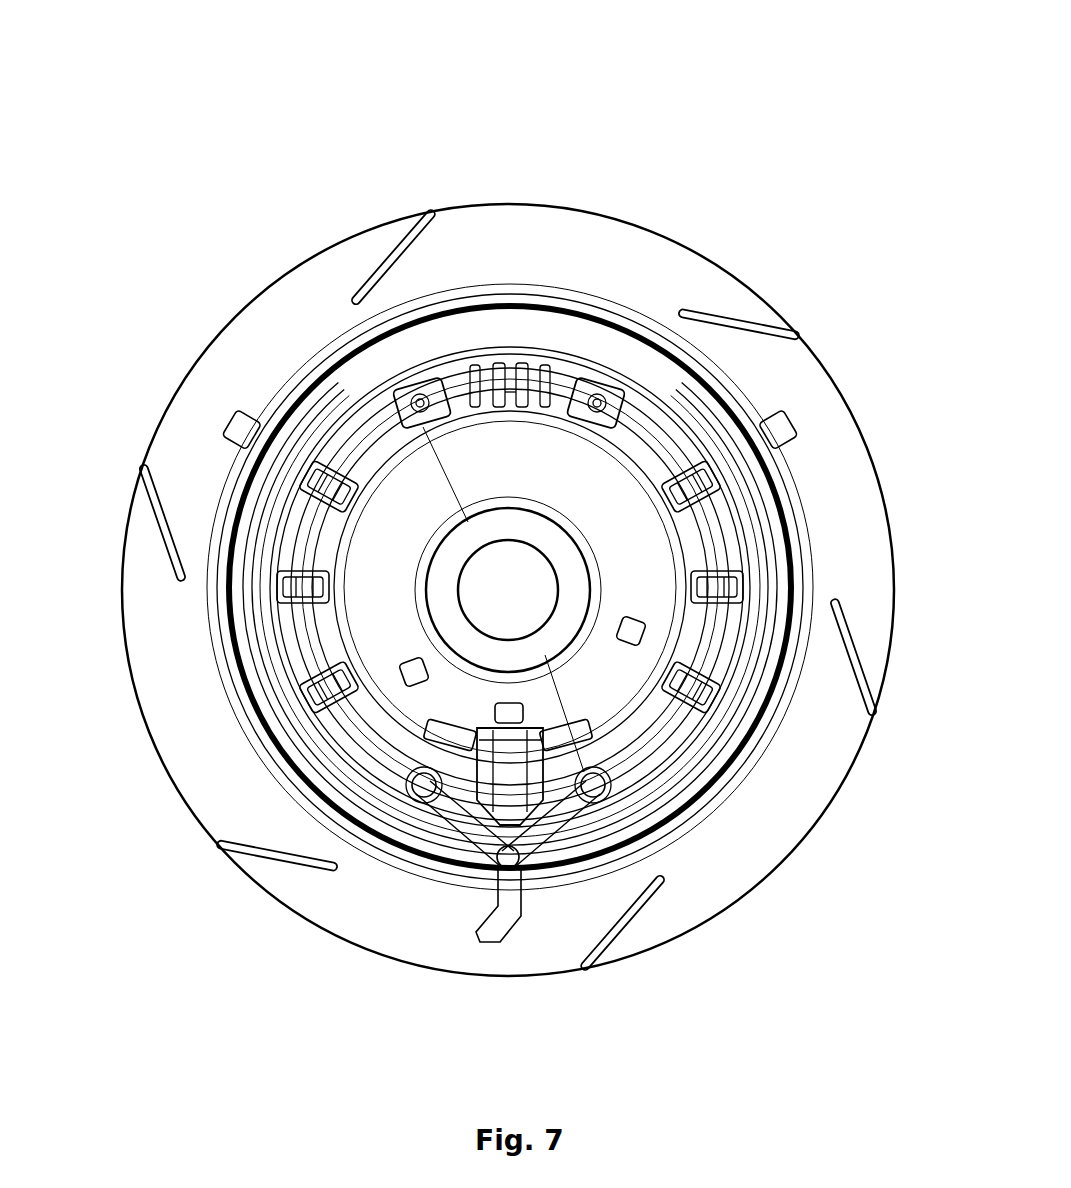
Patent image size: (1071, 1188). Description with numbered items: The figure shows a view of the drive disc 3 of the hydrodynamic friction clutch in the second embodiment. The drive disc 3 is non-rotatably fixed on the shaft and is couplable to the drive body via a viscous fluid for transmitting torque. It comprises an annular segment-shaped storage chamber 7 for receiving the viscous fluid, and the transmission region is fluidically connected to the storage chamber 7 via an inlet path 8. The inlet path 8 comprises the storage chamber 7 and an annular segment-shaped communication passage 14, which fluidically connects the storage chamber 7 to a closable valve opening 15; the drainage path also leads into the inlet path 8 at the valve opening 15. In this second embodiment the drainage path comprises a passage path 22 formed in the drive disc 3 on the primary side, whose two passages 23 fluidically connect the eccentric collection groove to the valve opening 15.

The drive disc 3 is at (862, 127).
The storage chamber 7 is at (510, 587).
The inlet path 8 is at (330, 433).
The communication passage 14 is at (263, 662).
The valve opening 15 is at (506, 870).
The passage path 22 is at (420, 792).
The passages 23 is at (508, 785).